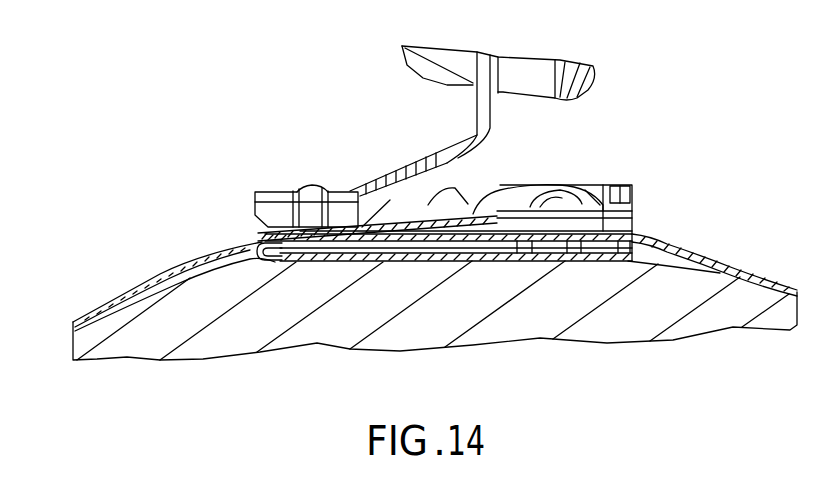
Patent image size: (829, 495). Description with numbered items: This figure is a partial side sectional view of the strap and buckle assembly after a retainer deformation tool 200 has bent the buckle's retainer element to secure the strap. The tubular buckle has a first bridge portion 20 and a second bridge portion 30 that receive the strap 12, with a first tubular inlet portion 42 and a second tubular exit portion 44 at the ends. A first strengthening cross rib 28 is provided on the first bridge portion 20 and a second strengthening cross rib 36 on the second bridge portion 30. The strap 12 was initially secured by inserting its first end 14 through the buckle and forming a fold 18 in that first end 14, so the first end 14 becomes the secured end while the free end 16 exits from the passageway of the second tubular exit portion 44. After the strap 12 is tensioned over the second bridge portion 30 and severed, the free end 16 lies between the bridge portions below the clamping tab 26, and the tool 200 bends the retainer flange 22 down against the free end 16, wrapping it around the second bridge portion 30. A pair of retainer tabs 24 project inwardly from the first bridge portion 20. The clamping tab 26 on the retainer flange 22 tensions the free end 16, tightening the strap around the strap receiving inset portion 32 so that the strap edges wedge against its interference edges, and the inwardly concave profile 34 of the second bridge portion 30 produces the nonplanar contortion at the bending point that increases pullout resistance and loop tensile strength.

The strap 12 is at (134, 281).
The first end of the strap 14 is at (537, 262).
The free end of the strap 16 is at (527, 184).
The fold 18 is at (217, 246).
The first bridge portion 20 is at (271, 184).
The retainer flange 22 is at (450, 172).
The retainer tabs 24 is at (392, 177).
The clamping tab 26 is at (480, 181).
The first strengthening cross rib 28 is at (312, 187).
The second bridge portion 30 is at (645, 184).
The strap receiving inset portion 32 is at (637, 194).
The inwardly concave profile 34 is at (600, 184).
The second strengthening cross rib 36 is at (560, 184).
The first tubular inlet portion 42 is at (257, 207).
The second tubular exit portion 44 is at (635, 218).
The tool 200 is at (580, 61).